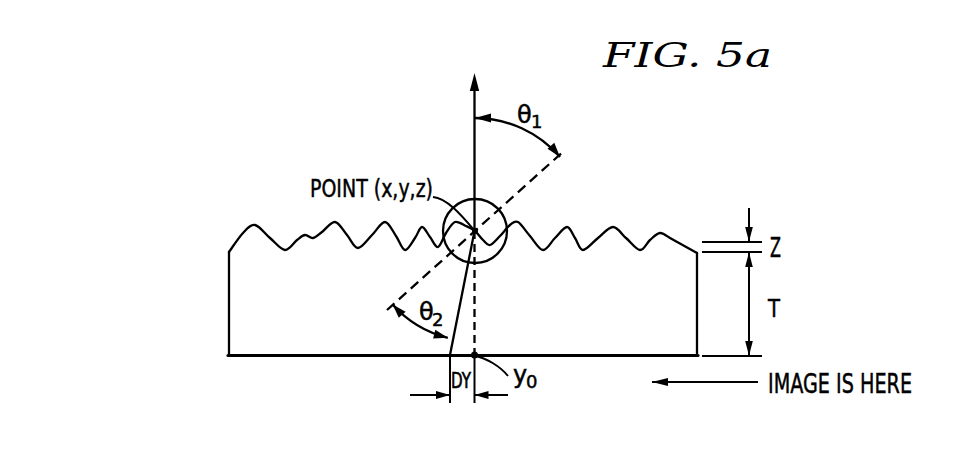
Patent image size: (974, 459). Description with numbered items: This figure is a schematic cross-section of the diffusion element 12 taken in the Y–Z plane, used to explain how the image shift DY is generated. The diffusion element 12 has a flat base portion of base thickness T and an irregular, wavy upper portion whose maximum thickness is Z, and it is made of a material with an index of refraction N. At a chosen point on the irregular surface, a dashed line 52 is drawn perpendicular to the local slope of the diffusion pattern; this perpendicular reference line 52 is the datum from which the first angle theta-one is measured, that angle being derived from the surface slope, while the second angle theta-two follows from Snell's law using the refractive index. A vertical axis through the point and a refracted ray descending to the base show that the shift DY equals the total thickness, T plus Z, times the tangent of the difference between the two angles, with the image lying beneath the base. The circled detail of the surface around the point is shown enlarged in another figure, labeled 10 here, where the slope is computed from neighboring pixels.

The diffusion element 12 is at (229, 298).
The perpendicular reference line 52 is at (547, 163).
The detail region shown in FIG. 10 is at (460, 203).